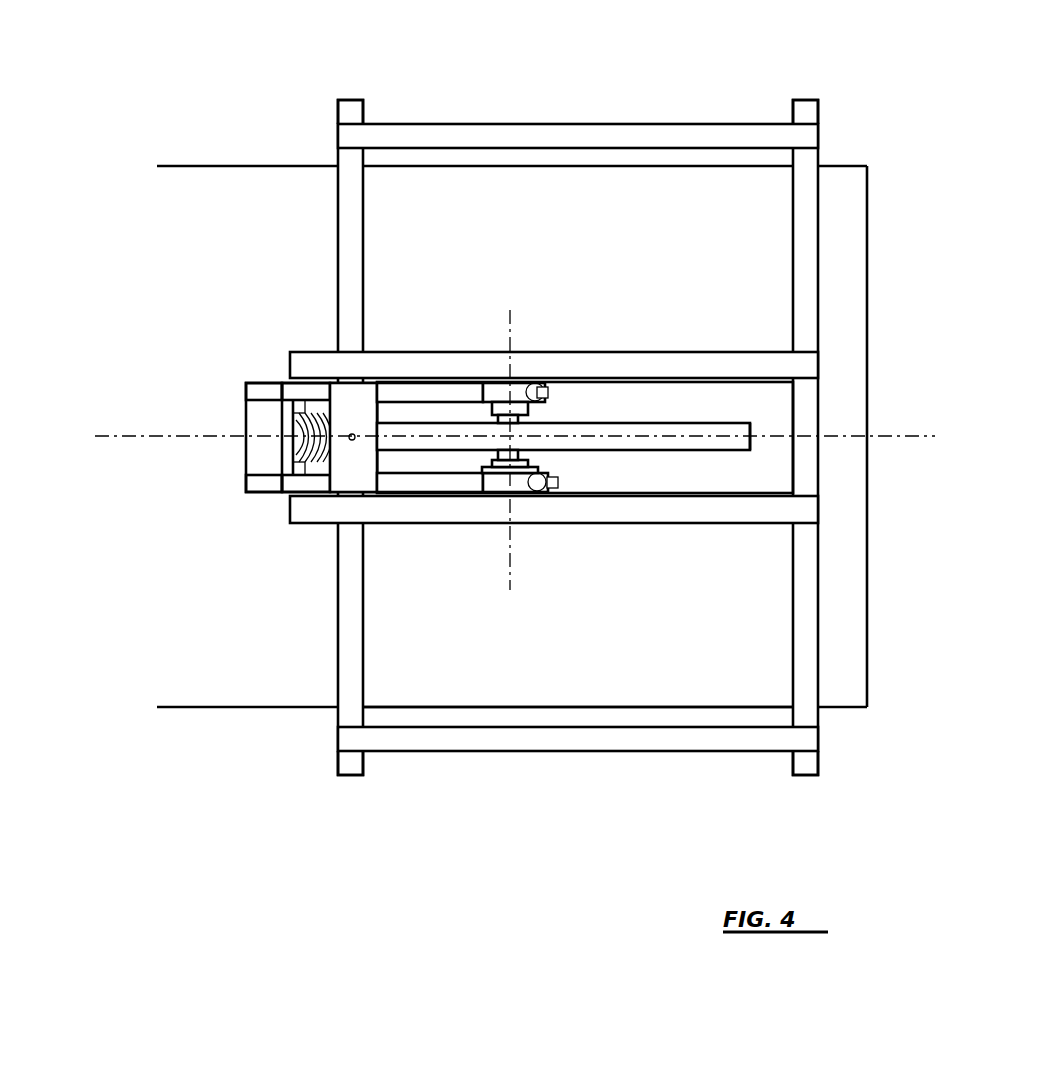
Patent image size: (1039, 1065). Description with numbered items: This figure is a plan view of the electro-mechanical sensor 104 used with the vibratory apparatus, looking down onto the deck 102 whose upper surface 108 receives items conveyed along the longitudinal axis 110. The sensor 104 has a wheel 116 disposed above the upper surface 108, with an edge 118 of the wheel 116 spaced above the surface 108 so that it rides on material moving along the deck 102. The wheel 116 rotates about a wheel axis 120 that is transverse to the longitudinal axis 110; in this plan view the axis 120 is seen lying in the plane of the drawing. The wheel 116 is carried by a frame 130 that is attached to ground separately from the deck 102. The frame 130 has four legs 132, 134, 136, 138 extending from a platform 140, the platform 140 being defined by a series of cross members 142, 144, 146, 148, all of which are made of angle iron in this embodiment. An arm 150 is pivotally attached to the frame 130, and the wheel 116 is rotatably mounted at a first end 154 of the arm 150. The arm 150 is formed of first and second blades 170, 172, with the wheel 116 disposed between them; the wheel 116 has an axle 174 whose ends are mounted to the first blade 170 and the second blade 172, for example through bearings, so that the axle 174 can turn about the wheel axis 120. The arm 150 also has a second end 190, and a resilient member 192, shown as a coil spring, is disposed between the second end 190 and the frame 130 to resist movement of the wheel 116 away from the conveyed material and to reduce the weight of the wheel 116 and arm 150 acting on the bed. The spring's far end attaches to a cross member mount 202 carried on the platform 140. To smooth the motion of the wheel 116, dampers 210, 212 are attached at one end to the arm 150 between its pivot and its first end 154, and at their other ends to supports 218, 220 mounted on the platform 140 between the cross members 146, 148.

The deck 102 is at (838, 658).
The electro-mechanical sensor 104 is at (552, 67).
The upper surface 108 is at (157, 520).
The longitudinal axis 110 is at (125, 434).
The wheel 116 is at (752, 430).
The edge 118 is at (752, 441).
The wheel axis 120 is at (520, 325).
The frame 130 is at (634, 441).
The leg 132 is at (365, 765).
The leg 134 is at (790, 765).
The leg 136 is at (365, 116).
The leg 138 is at (790, 116).
The platform 140 is at (372, 722).
The cross member 142 is at (540, 742).
The cross member 144 is at (528, 140).
The cross member 146 is at (363, 672).
The cross member 148 is at (793, 610).
The arm 150 is at (275, 434).
The first end 154 is at (571, 469).
The first blade 170 is at (428, 494).
The second blade 172 is at (428, 386).
The axle 174 is at (540, 496).
The second end 190 is at (278, 492).
The resilient member 192 is at (288, 380).
The cross member mount 202 is at (345, 398).
The damper 210 is at (492, 496).
The damper 212 is at (490, 384).
The support 218 is at (606, 512).
The support 220 is at (640, 352).